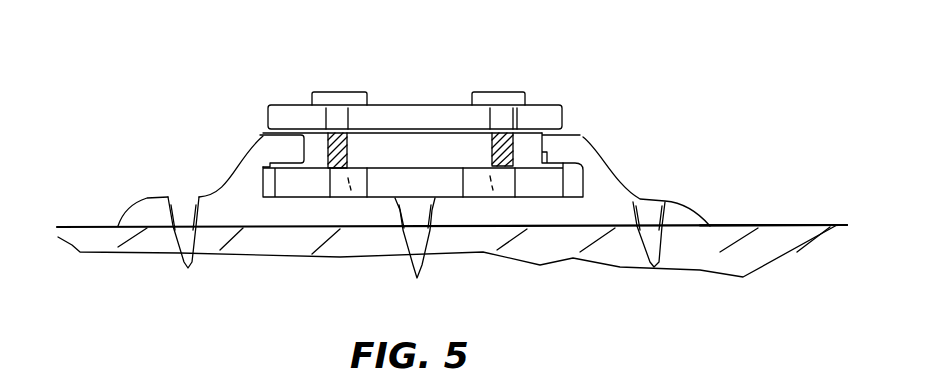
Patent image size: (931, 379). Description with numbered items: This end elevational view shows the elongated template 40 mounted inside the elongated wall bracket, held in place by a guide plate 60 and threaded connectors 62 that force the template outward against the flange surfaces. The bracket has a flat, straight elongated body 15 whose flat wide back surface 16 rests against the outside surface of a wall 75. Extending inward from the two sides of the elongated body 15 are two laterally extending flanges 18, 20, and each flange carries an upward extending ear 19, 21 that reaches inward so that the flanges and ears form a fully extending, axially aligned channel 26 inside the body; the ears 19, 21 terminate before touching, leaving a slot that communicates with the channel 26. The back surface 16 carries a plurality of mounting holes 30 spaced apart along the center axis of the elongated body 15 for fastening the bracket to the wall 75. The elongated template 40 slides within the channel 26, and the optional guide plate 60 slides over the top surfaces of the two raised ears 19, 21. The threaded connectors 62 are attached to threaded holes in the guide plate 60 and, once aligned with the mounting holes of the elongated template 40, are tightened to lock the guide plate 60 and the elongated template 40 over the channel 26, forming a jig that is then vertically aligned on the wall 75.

The elongated body 15 is at (125, 210).
The back surface 16 is at (295, 230).
The flange 18 is at (260, 137).
The ear 19 is at (282, 153).
The flange 20 is at (687, 208).
The ear 21 is at (583, 135).
The channel 26 is at (437, 180).
The mounting hole 30 is at (655, 182).
The elongated template 40 is at (552, 178).
The guide plate 60 is at (538, 104).
The threaded connector 62 is at (470, 92).
The wall 75 is at (783, 225).